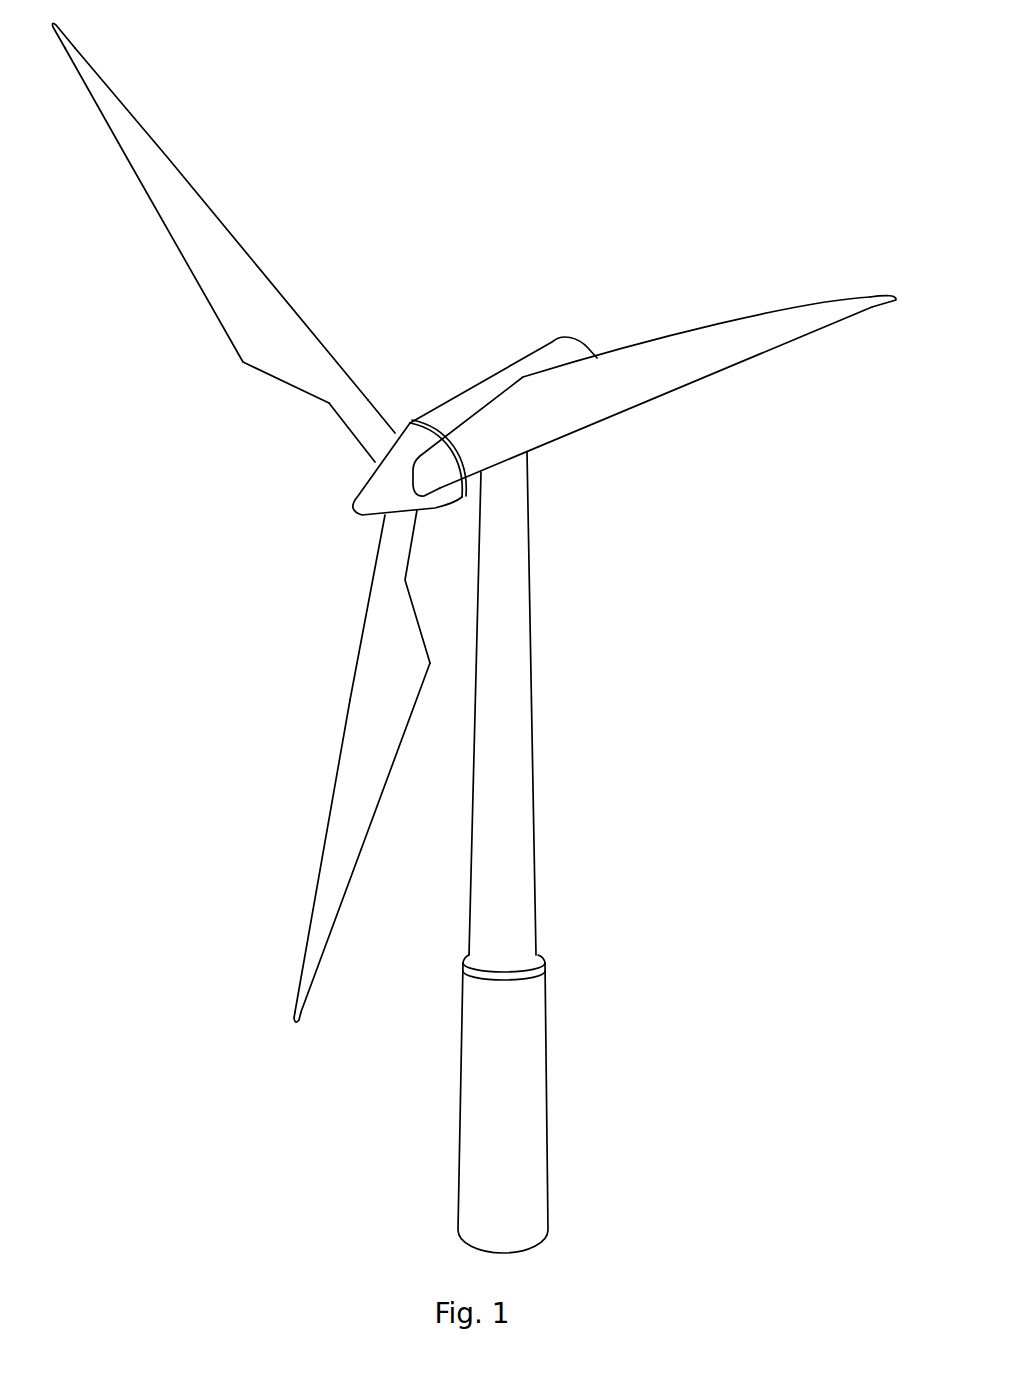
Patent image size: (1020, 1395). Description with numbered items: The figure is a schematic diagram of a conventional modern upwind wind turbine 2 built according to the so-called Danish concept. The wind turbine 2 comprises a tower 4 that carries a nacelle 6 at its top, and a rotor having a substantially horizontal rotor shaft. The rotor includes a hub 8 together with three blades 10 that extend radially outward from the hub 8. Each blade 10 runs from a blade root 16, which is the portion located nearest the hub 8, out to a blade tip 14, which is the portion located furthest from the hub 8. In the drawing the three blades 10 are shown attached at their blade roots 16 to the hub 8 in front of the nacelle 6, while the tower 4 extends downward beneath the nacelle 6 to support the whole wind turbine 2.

The wind turbine 2 is at (474, 638).
The tower 4 is at (523, 712).
The nacelle 6 is at (468, 402).
The hub 8 is at (373, 489).
The blade 10 is at (257, 335).
The blade tip 14 is at (95, 83).
The blade root 16 is at (380, 438).